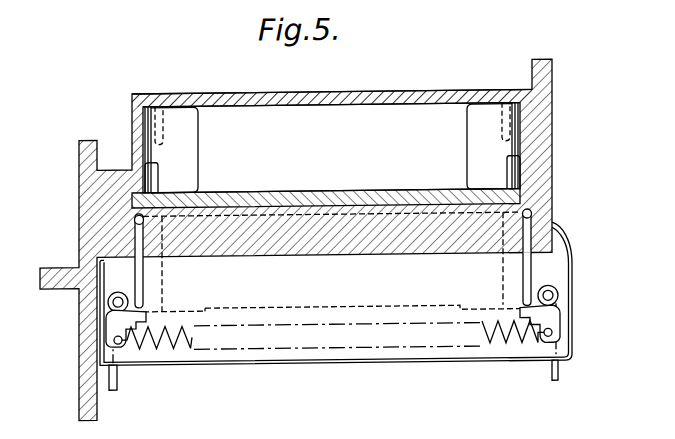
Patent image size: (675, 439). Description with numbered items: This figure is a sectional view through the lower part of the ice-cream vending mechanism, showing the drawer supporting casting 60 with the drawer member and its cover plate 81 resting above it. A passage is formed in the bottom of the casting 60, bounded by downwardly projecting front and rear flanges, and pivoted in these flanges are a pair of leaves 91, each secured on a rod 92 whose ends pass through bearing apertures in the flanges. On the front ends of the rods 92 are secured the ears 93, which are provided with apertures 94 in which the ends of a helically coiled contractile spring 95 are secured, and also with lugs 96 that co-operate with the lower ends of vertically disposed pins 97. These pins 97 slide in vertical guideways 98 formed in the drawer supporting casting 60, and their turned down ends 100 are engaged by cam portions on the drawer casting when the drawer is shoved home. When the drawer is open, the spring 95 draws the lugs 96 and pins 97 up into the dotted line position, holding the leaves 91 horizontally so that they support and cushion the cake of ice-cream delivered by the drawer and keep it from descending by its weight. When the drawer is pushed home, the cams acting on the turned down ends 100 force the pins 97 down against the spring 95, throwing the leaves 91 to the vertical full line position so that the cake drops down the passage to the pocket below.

The drawer supporting casting 60 is at (375, 255).
The cover plate 81 is at (384, 101).
The leaves 91 is at (117, 383).
The rod 92 is at (121, 302).
The ears 93 is at (118, 327).
The apertures 94 is at (127, 349).
The helically coiled contractile spring 95 is at (490, 349).
The lugs 96 is at (186, 324).
The pins 97 is at (139, 277).
The vertical guideways 98 is at (134, 243).
The turned down ends 100 is at (134, 221).